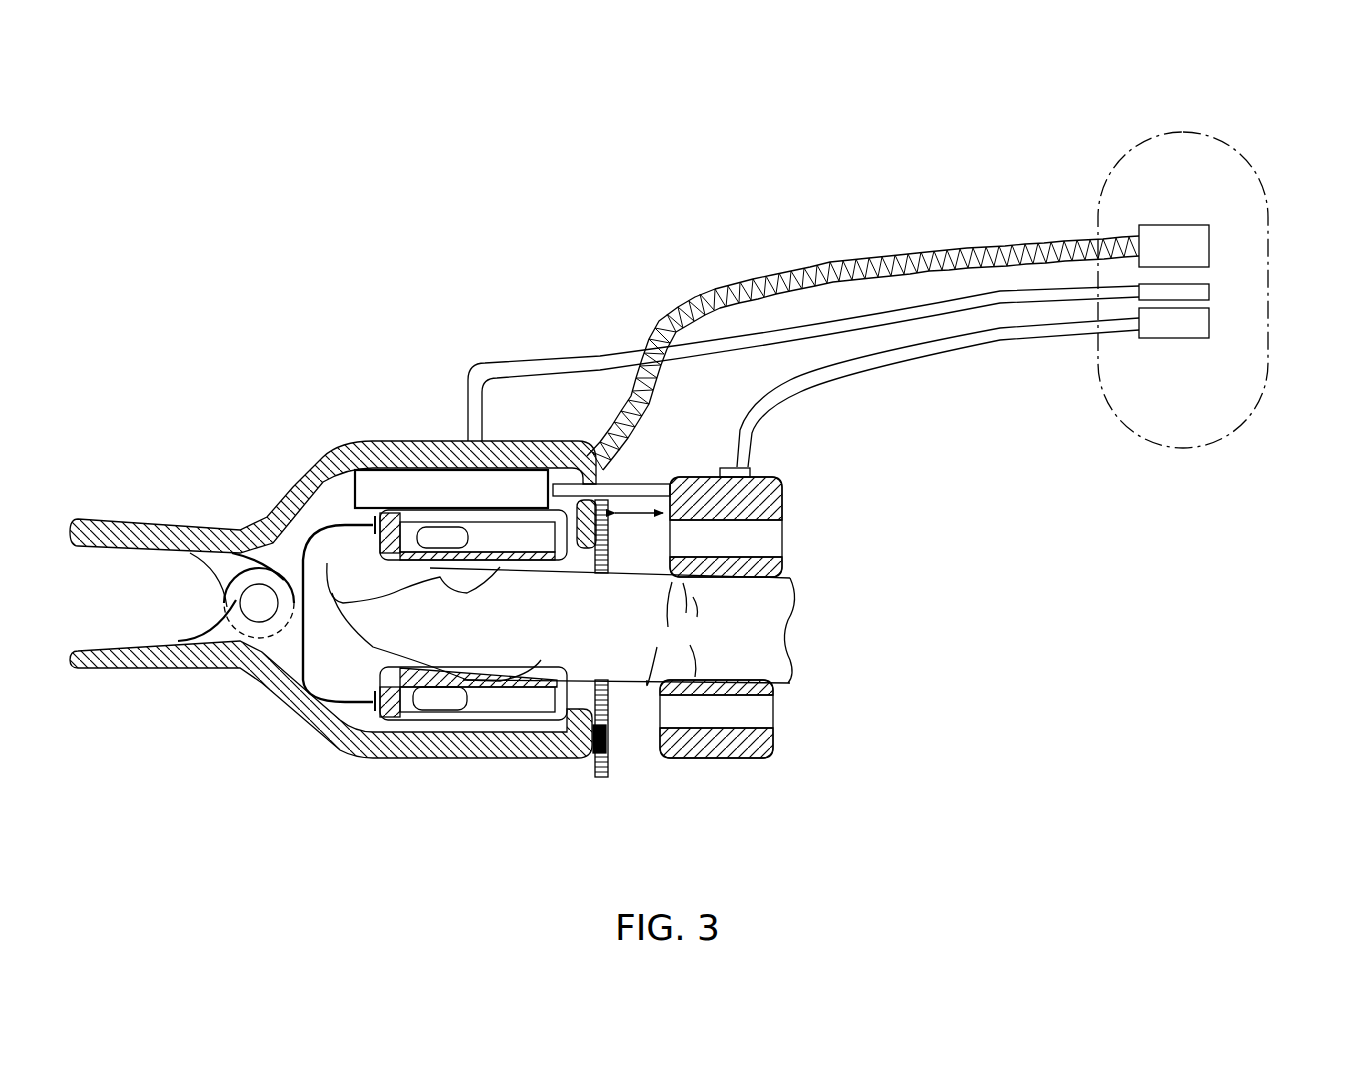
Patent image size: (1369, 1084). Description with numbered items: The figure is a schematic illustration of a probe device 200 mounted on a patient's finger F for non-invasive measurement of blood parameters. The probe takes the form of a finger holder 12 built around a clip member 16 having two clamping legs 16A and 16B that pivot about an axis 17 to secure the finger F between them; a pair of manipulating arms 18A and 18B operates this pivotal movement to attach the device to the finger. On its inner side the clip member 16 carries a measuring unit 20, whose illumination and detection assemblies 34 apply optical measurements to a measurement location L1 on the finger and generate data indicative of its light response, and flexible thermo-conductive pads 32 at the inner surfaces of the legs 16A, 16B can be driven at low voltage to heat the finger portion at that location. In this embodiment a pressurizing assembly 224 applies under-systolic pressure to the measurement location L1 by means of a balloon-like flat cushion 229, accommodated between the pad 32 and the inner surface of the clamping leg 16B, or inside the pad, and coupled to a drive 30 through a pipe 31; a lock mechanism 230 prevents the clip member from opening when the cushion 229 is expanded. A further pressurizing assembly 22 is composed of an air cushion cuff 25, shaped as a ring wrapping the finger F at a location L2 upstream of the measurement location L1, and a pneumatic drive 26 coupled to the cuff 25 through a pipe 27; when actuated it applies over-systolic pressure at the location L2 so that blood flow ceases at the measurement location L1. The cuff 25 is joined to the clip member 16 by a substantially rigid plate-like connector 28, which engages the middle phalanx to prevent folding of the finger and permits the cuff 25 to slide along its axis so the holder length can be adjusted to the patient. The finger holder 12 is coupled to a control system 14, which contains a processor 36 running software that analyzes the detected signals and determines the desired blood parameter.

The probe device 200 is at (193, 223).
The finger holder 12 is at (262, 462).
The control system 14 is at (1282, 190).
The clip member 16 is at (260, 703).
The clamping leg 16A is at (470, 763).
The clamping leg 16B is at (397, 440).
The axis 17 is at (258, 603).
The manipulating arm 18A is at (118, 663).
The manipulating arm 18B is at (80, 518).
The measuring unit 20 is at (398, 540).
The pressurizing assembly 22 is at (806, 541).
The air cushion cuff 25 is at (745, 743).
The pneumatic drive 26 is at (1170, 340).
The pipe 27 is at (920, 357).
The rigid connector 28 is at (637, 477).
The drive 30 is at (1213, 297).
The pipe 31 is at (997, 307).
The flexible thermo-conductive pad 32 is at (545, 568).
The illumination and detection assemblies 34 is at (437, 537).
The processor 36 is at (1177, 227).
The pressurizing assembly 224 is at (562, 430).
The flat cushion 229 is at (385, 490).
The lock mechanism 230 is at (608, 723).
The finger F is at (657, 647).
The measurement location L1 is at (452, 593).
The location L2 is at (793, 590).